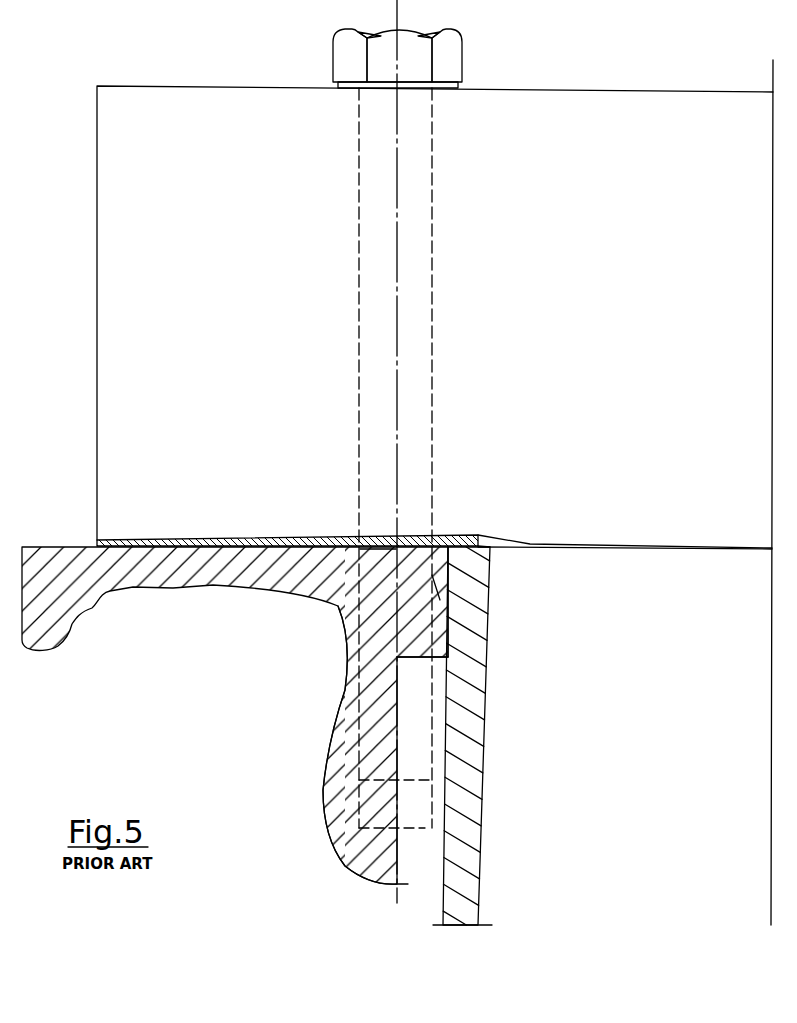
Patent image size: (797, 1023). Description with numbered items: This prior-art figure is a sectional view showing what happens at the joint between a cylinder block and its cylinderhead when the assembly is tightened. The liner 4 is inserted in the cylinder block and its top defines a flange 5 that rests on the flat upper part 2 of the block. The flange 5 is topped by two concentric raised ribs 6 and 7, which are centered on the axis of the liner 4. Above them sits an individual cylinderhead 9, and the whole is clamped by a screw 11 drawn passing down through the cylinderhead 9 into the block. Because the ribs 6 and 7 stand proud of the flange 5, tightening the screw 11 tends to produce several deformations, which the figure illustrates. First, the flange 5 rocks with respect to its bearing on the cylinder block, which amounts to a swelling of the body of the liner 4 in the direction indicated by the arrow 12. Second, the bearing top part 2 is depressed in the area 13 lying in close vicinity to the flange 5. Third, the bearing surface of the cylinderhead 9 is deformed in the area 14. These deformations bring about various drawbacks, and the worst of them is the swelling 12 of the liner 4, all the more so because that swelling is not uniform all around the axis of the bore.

The flat upper part 2 is at (64, 547).
The liner 4 is at (470, 855).
The flange 5 is at (329, 745).
The raised rib 6 is at (494, 560).
The raised rib 7 is at (452, 600).
The individual cylinderhead 9 is at (120, 288).
The screw 11 is at (420, 288).
The swelling of the liner 12 is at (505, 907).
The area of depression 13 is at (394, 551).
The area of cylinderhead deformation 14 is at (445, 539).